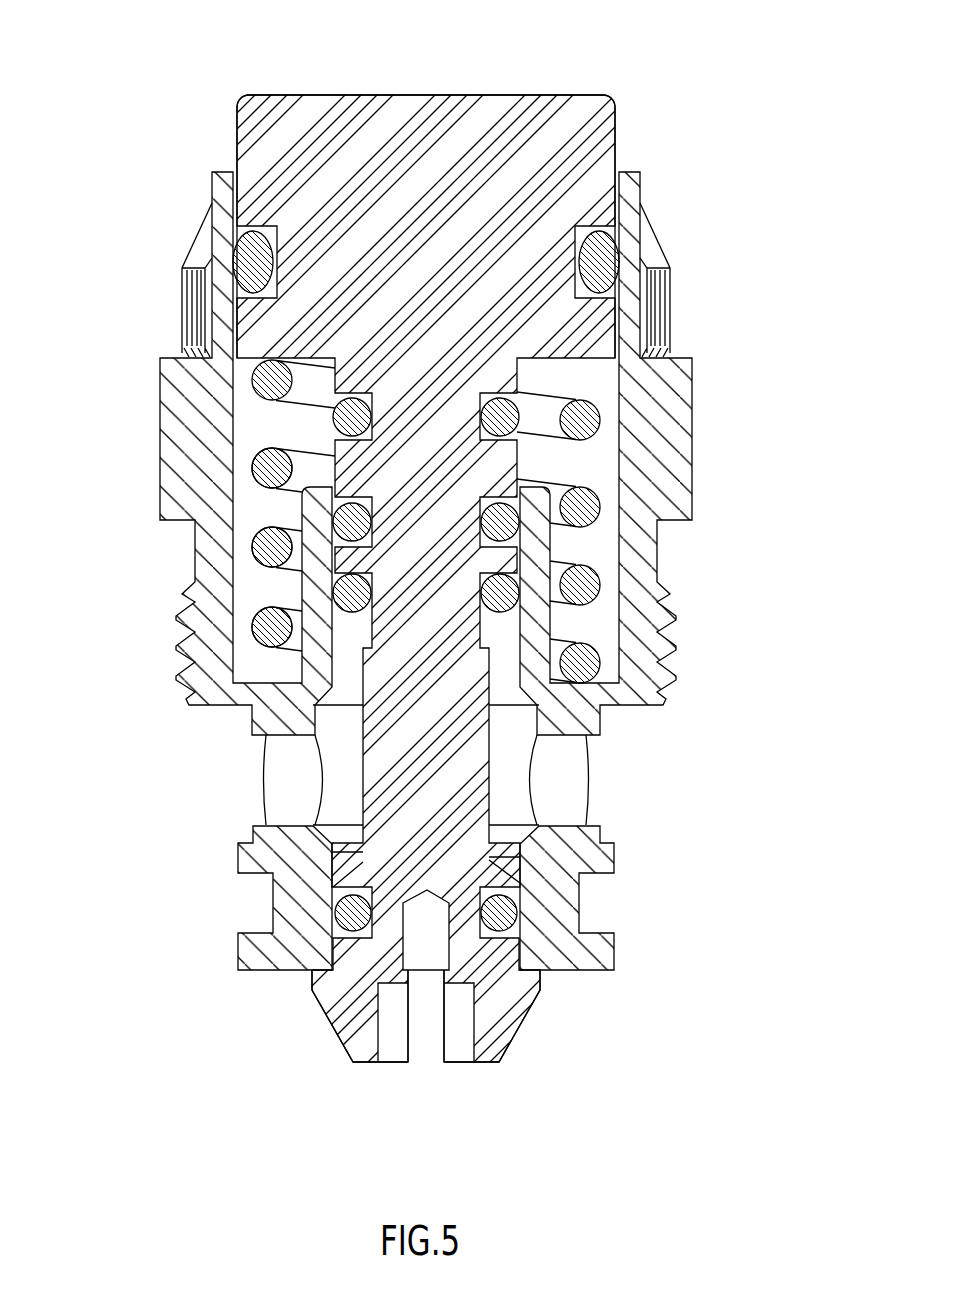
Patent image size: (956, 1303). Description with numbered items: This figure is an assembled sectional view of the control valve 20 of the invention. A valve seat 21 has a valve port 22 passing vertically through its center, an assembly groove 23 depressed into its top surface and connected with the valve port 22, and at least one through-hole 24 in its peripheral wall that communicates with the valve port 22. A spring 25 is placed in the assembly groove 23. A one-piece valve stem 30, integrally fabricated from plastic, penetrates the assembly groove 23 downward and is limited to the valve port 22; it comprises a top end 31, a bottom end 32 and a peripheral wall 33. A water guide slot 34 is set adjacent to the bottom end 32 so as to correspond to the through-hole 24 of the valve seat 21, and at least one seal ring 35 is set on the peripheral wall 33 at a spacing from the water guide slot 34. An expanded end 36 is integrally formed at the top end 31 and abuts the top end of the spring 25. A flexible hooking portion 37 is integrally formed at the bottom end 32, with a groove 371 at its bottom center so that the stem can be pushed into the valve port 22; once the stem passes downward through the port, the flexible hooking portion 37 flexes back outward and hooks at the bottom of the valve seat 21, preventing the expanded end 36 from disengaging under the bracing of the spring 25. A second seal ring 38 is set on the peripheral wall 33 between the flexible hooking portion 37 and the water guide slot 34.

The control valve 20 is at (618, 68).
The valve seat 21 is at (660, 421).
The valve port 22 is at (502, 847).
The assembly groove 23 is at (610, 612).
The through-hole 24 is at (277, 807).
The spring 25 is at (268, 472).
The one-piece valve stem 30 is at (462, 509).
The top end 31 is at (527, 372).
The bottom end 32 is at (523, 853).
The peripheral wall 33 is at (518, 453).
The water guide slot 34 is at (330, 842).
The seal ring 35 is at (272, 627).
The expanded end 36 is at (567, 127).
The flexible hooking portion 37 is at (537, 997).
The second seal ring 38 is at (335, 935).
The groove 371 is at (437, 1040).